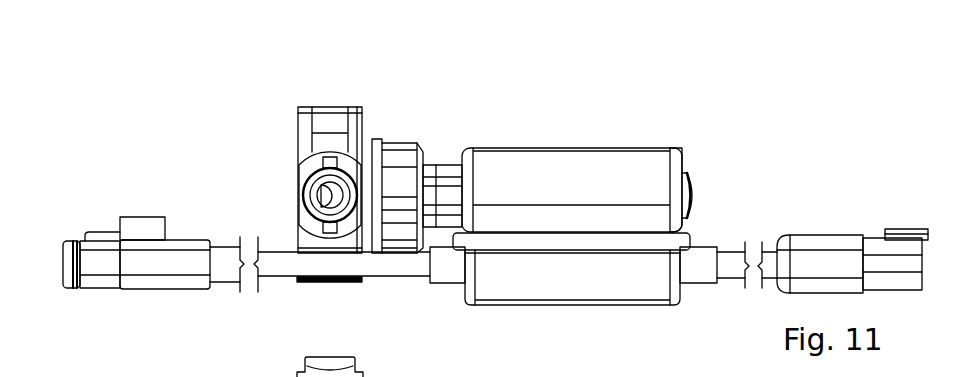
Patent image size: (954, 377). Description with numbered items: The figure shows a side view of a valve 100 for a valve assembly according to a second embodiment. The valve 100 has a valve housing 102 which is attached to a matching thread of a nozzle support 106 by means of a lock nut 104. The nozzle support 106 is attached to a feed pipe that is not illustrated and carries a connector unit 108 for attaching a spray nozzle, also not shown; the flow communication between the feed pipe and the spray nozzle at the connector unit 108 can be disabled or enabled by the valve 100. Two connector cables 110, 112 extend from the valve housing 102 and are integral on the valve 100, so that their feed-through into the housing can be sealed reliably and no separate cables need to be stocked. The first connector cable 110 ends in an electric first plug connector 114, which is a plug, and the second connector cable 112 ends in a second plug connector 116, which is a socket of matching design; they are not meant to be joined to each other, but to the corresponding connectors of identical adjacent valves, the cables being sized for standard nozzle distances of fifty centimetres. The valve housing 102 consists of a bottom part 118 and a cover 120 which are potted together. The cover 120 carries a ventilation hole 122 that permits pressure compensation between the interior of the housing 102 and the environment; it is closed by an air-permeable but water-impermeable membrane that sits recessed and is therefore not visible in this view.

The valve 100 is at (577, 112).
The valve housing 102 is at (653, 148).
The lock nut 104 is at (403, 143).
The nozzle support 106 is at (353, 103).
The connector unit 108 is at (303, 181).
The first connector cable 110 is at (404, 265).
The second connector cable 112 is at (730, 275).
The first plug connector 114 is at (95, 250).
The second plug connector 116 is at (832, 243).
The bottom part 118 is at (628, 283).
The cover 120 is at (672, 165).
The ventilation hole 122 is at (704, 192).